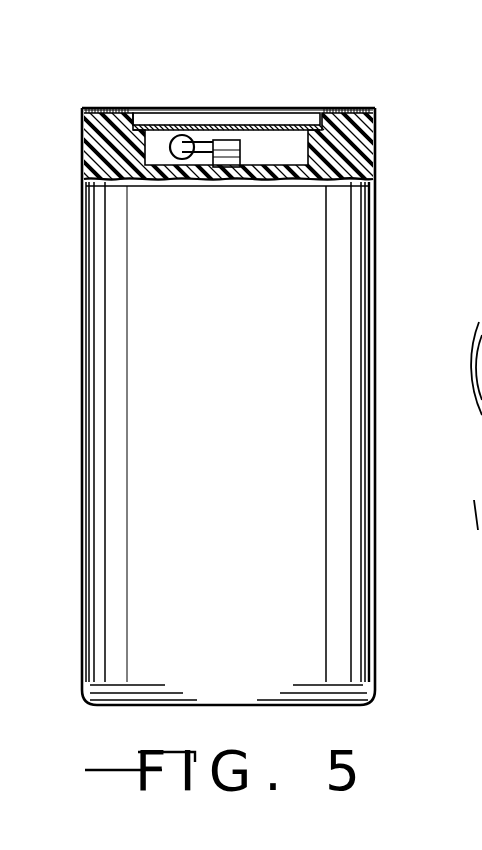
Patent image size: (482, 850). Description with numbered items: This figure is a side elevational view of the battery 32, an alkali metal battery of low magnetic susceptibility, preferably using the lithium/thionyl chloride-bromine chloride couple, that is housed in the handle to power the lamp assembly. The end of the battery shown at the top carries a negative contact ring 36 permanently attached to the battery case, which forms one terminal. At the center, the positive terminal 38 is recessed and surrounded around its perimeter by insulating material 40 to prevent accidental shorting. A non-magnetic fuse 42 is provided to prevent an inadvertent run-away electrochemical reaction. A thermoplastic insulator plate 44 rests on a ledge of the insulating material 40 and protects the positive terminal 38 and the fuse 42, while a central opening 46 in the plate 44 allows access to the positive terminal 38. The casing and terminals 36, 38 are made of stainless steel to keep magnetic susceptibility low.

The battery 32 is at (376, 287).
The negative contact ring 36 is at (353, 112).
The positive terminal 38 is at (285, 175).
The insulating material 40 is at (300, 108).
The non-magnetic fuse 42 is at (170, 125).
The thermoplastic insulator plate 44 is at (158, 125).
The central opening 46 is at (243, 160).